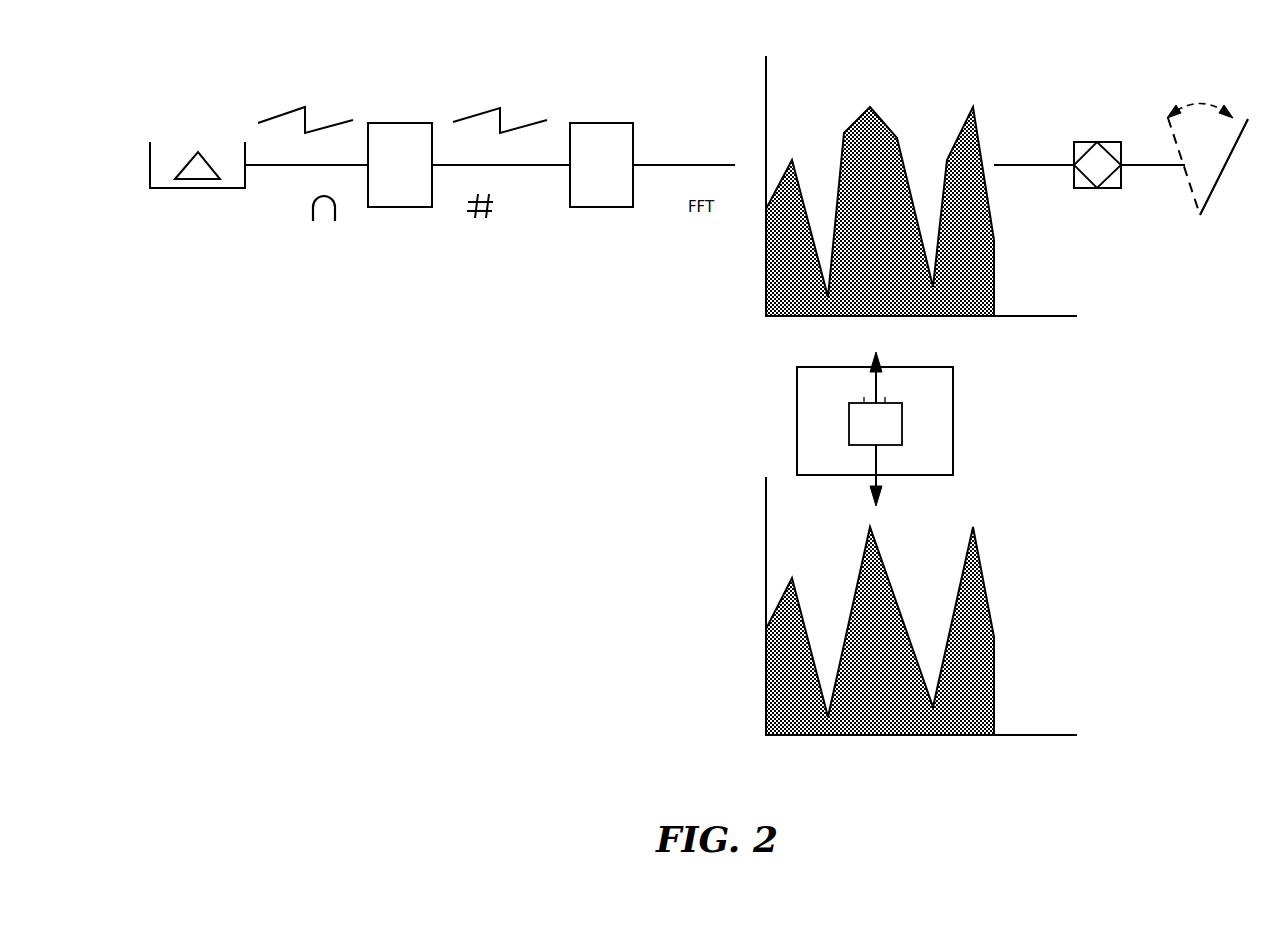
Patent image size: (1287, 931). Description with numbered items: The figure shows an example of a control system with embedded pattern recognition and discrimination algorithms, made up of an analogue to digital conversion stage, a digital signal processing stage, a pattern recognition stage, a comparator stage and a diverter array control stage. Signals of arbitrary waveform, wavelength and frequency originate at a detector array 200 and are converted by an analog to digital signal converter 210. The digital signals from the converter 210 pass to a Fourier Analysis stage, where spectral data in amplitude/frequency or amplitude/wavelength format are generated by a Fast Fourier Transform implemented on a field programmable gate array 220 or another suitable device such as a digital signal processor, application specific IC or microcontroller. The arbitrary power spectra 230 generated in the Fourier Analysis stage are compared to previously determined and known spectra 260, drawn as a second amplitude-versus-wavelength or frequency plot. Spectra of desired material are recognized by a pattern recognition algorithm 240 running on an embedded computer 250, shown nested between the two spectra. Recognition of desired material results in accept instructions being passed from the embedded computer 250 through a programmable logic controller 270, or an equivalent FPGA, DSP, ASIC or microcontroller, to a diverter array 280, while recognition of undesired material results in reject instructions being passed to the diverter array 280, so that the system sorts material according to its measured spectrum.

The detector array 200 is at (197, 181).
The analog to digital signal converter 210 is at (400, 175).
The field programmable gate array 220 is at (601, 175).
The power spectra 230 is at (910, 211).
The pattern recognition algorithm 240 is at (875, 421).
The embedded computer 250 is at (875, 429).
The known spectra 260 is at (910, 631).
The programmable logic controller 270 is at (1097, 154).
The diverter array 280 is at (1207, 174).